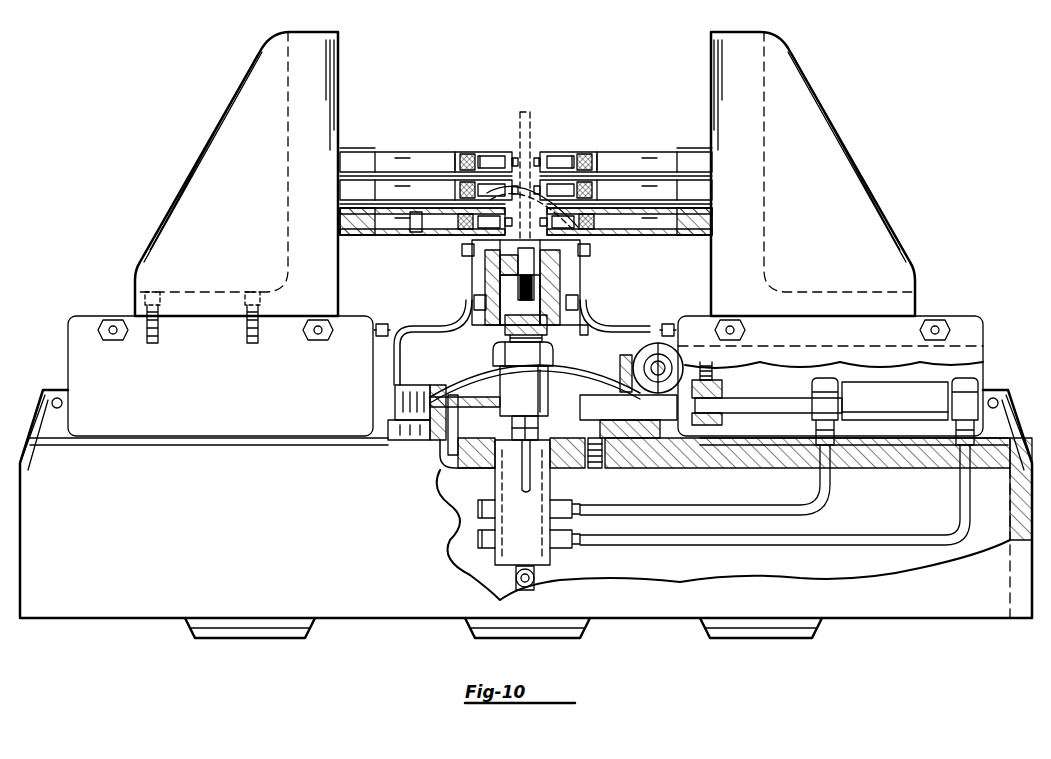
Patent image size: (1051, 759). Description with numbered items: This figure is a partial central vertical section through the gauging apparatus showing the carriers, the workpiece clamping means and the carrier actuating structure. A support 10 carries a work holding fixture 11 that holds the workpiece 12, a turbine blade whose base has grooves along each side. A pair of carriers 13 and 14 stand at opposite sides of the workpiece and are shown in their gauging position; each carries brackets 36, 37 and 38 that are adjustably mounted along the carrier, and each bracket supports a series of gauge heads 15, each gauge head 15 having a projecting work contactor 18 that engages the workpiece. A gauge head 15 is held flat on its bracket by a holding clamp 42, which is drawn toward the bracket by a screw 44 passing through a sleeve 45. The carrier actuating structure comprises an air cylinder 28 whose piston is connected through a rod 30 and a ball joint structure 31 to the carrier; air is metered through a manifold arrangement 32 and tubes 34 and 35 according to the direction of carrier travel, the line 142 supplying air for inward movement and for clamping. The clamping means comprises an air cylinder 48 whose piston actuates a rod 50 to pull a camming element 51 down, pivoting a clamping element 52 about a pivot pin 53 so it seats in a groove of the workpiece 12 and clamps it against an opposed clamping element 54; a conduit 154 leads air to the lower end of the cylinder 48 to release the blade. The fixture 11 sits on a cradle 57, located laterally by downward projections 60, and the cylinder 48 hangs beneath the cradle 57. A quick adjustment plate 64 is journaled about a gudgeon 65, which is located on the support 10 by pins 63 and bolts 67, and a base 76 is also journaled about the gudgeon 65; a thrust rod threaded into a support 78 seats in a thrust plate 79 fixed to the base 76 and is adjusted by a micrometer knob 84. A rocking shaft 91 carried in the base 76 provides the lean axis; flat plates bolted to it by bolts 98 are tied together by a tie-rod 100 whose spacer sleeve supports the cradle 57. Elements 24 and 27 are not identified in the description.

The support 10 is at (82, 602).
The work holding fixture 11 is at (565, 264).
The workpiece 12 is at (531, 108).
The carrier 13 is at (222, 126).
The carrier 14 is at (818, 133).
The gauge head 15 is at (498, 160).
The work contactor 18 is at (518, 153).
The clamp plate 24 is at (957, 345).
The screw 27 is at (382, 322).
The air cylinder 28 is at (895, 401).
The rod 30 is at (790, 402).
The ball joint structure 31 is at (722, 395).
The manifold arrangement 32 is at (552, 490).
The tube 34 is at (745, 512).
The tube 35 is at (895, 537).
The bracket 36 is at (338, 160).
The bracket 37 is at (338, 190).
The bracket 38 is at (340, 222).
The holding clamp 42 is at (366, 152).
The screw 44 is at (410, 232).
The sleeve 45 is at (415, 160).
The air cylinder 48 is at (548, 383).
The rod 50 is at (560, 318).
The camming element 51 is at (572, 288).
The clamping element 52 is at (490, 255).
The pivot pin 53 is at (485, 268).
The clamping element 54 is at (560, 250).
The cradle 57 is at (485, 318).
The downward projections 60 is at (480, 275).
The pins 63 is at (445, 465).
The quick adjustment plate 64 is at (395, 432).
The gudgeon 65 is at (448, 440).
The bolts 67 is at (600, 455).
The base 76 is at (400, 402).
The support 78 is at (628, 416).
The thrust plate 79 is at (636, 365).
The micrometer knob 84 is at (668, 375).
The rocking shaft 91 is at (538, 165).
The bolts 98 is at (475, 248).
The tie-rod 100 is at (470, 302).
The line 142 is at (500, 500).
The conduit 154 is at (505, 580).